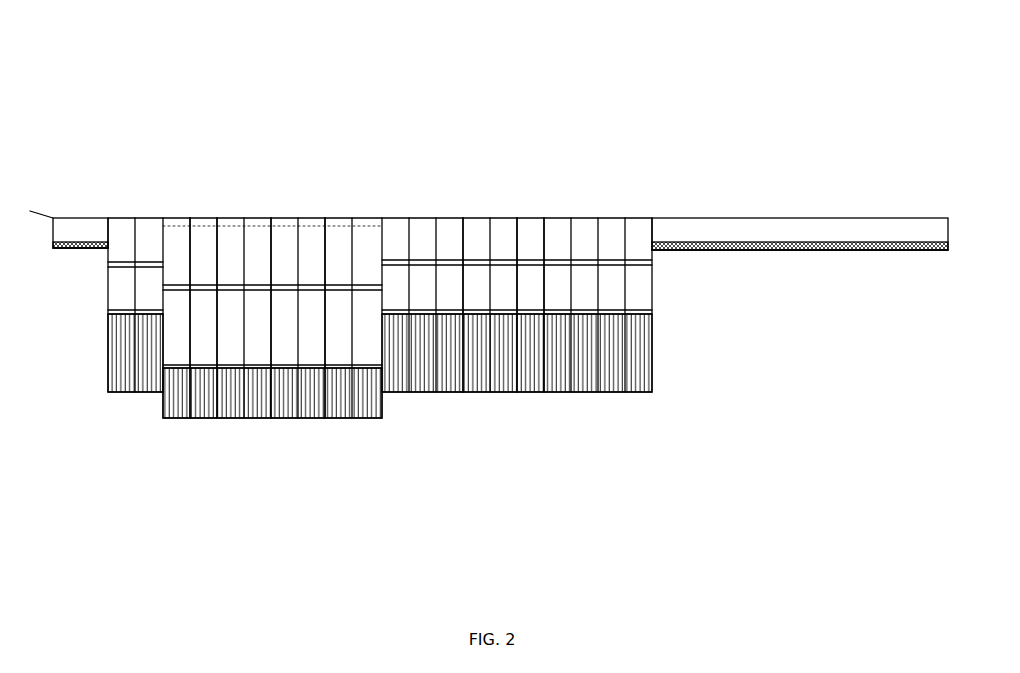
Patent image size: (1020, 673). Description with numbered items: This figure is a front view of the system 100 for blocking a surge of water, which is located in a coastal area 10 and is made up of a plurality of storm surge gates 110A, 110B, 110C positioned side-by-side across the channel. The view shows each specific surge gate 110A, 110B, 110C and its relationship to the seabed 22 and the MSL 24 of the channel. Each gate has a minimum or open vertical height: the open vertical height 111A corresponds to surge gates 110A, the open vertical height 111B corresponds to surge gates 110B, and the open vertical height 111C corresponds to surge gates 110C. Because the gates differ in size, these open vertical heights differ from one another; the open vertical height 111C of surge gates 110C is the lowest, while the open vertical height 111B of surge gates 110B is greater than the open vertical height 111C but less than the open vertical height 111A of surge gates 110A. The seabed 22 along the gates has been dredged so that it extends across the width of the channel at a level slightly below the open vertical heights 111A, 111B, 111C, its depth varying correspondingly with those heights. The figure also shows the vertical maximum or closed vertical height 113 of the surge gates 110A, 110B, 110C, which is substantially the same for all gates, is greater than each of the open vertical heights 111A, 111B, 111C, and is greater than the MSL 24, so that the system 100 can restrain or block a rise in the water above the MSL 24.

The coastal area 10 is at (81, 79).
The system 100 is at (412, 71).
The seabed 22 is at (65, 245).
The MSL 24 is at (232, 230).
The surge gate 110A is at (62, 249).
The surge gate 110B is at (150, 277).
The surge gate 110C is at (201, 303).
The open vertical height 111A is at (85, 245).
The open vertical height 111B is at (126, 262).
The open vertical height 111C is at (285, 292).
The closed vertical height 113 is at (769, 217).